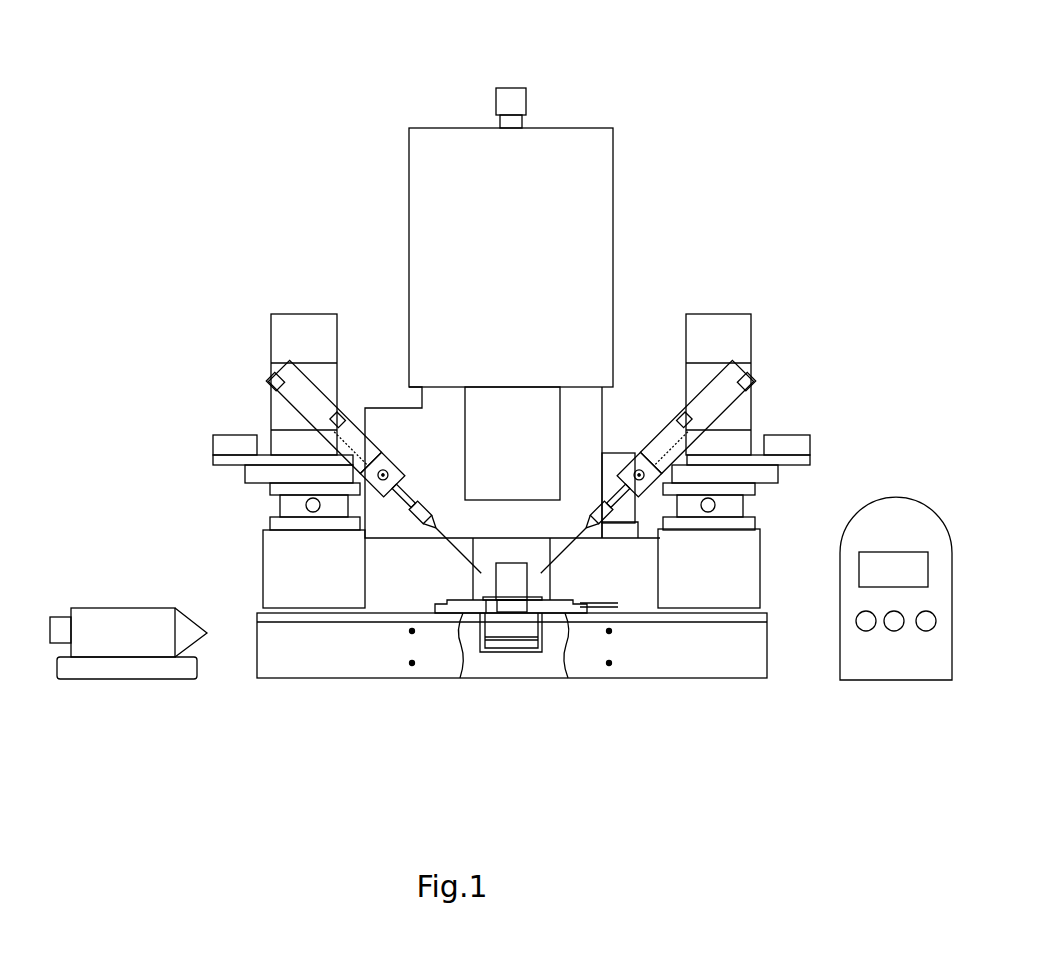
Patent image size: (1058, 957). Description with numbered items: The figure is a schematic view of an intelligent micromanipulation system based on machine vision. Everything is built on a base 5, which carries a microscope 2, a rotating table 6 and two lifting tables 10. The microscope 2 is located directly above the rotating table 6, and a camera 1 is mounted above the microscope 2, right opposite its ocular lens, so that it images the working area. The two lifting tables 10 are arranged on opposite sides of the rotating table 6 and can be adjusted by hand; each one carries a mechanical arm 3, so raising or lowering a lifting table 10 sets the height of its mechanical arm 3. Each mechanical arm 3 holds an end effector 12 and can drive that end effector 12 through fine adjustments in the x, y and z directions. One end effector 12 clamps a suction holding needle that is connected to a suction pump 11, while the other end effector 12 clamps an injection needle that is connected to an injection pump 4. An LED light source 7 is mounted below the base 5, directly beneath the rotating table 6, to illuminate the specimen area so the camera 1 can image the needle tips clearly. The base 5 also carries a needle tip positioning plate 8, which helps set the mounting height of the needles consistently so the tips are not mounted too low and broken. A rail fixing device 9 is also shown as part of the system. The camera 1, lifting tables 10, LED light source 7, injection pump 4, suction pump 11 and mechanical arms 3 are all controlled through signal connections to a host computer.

The camera 1 is at (512, 102).
The microscope 2 is at (588, 200).
The mechanical arm 3 is at (727, 338).
The injection pump 4 is at (890, 523).
The base 5 is at (712, 645).
The rotating table 6 is at (543, 608).
The LED light source 7 is at (522, 645).
The needle tip positioning plate 8 is at (510, 580).
The rail fixing device 9 is at (486, 605).
The lifting table 10 is at (302, 565).
The suction pump 11 is at (207, 632).
The end effector 12 is at (272, 357).